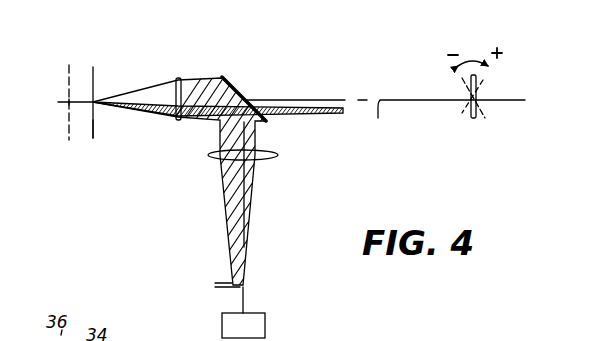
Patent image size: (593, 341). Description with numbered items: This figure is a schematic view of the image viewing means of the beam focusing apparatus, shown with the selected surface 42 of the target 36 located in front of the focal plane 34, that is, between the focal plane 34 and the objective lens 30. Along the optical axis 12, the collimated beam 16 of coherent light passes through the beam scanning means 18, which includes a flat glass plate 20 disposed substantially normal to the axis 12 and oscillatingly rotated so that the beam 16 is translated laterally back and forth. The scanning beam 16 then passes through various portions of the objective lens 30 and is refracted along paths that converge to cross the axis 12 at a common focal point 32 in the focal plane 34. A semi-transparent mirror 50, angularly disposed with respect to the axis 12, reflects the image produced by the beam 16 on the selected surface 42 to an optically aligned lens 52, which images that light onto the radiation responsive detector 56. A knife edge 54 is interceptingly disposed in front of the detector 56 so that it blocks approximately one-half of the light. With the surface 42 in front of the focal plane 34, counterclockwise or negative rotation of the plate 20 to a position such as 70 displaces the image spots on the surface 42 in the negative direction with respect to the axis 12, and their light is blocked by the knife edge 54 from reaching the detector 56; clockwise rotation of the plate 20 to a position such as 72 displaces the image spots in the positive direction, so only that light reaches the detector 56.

The optical axis 12 is at (451, 119).
The collimated beam 16 is at (313, 114).
The beam scanning means 18 is at (456, 128).
The plate 20 is at (476, 118).
The objective lens 30 is at (179, 79).
The focal point 32 is at (68, 103).
The focal plane 34 is at (71, 68).
The target 36 is at (95, 75).
The selected surface 42 is at (94, 126).
The semi-transparent mirror 50 is at (226, 79).
The lens 52 is at (275, 157).
The knife edge 54 is at (221, 292).
The radiation responsive detector 56 is at (261, 327).
The negative rotation position 70 is at (463, 84).
The positive rotation position 72 is at (483, 80).